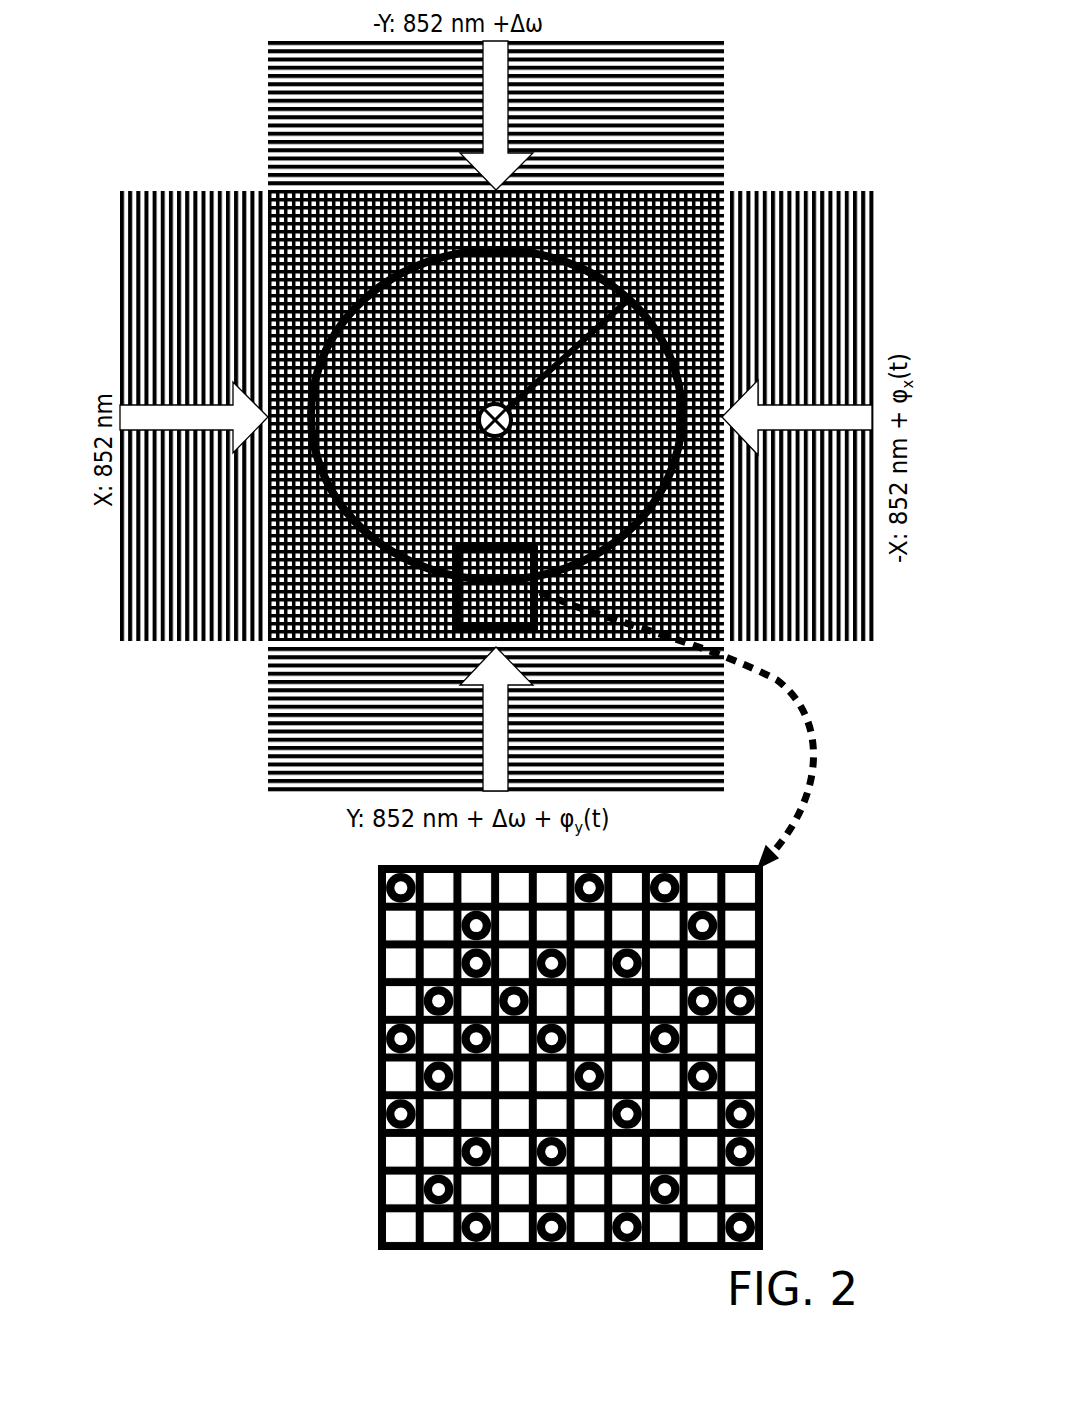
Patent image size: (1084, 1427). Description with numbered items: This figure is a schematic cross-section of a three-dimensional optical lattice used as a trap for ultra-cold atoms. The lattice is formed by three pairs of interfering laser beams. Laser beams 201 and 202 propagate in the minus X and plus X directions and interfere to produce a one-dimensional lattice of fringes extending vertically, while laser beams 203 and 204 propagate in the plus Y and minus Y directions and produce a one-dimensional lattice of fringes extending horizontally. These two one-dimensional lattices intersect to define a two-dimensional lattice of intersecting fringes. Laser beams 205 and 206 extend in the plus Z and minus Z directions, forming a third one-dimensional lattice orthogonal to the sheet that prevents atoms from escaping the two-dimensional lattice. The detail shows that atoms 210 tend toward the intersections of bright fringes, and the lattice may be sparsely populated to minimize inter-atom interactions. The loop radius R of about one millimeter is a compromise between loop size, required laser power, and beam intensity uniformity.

The laser beam 201 is at (176, 429).
The laser beam 202 is at (776, 429).
The laser beam 203 is at (477, 676).
The laser beam 204 is at (477, 175).
The laser beam 205 is at (330, 220).
The laser beam 206 is at (273, 242).
The loop radius R is at (550, 337).
The atoms 210 is at (378, 1035).